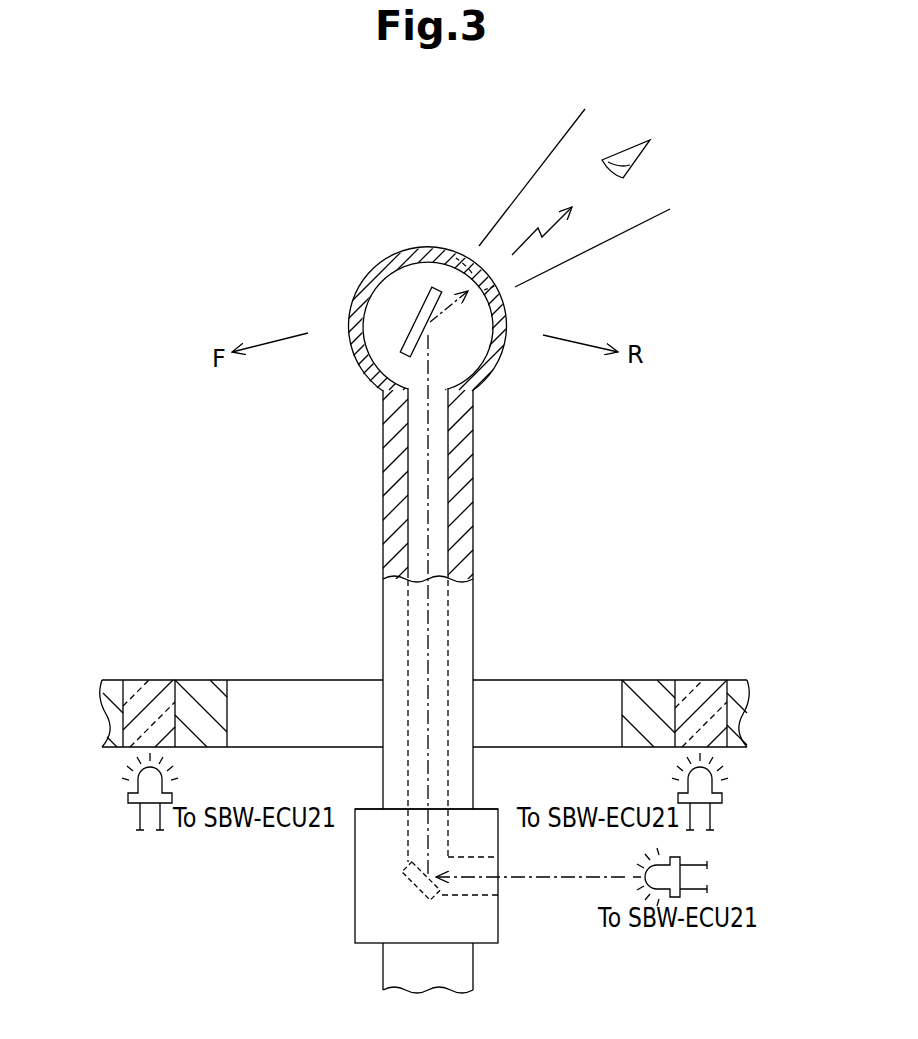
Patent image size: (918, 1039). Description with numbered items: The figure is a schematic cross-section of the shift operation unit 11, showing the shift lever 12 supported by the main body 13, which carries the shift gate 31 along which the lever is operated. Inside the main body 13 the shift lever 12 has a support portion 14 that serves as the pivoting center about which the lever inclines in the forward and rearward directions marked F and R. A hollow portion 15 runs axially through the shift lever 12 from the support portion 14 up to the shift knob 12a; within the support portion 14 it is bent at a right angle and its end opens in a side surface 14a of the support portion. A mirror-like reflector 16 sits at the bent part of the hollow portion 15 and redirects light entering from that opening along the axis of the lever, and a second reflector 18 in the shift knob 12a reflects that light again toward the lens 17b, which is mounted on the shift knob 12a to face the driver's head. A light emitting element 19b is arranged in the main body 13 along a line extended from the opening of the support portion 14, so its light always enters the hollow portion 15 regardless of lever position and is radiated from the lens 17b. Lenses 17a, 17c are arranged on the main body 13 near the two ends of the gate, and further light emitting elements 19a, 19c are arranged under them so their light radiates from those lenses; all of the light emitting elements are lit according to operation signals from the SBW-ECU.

The shift operation unit 11 is at (322, 176).
The shift lever 12 is at (473, 450).
The shift knob 12a is at (487, 372).
The main body 13 is at (653, 681).
The support portion 14 is at (355, 860).
The side surface 14a is at (486, 809).
The hollow portion 15 is at (400, 479).
The reflector 16 is at (410, 903).
The lens 17a is at (155, 681).
The lens 17b is at (477, 263).
The lens 17c is at (698, 681).
The reflector 18 is at (411, 342).
The light emitting element 19a is at (134, 786).
The light emitting element 19b is at (672, 859).
The light emitting element 19c is at (718, 782).
The shift gate 31 is at (238, 681).